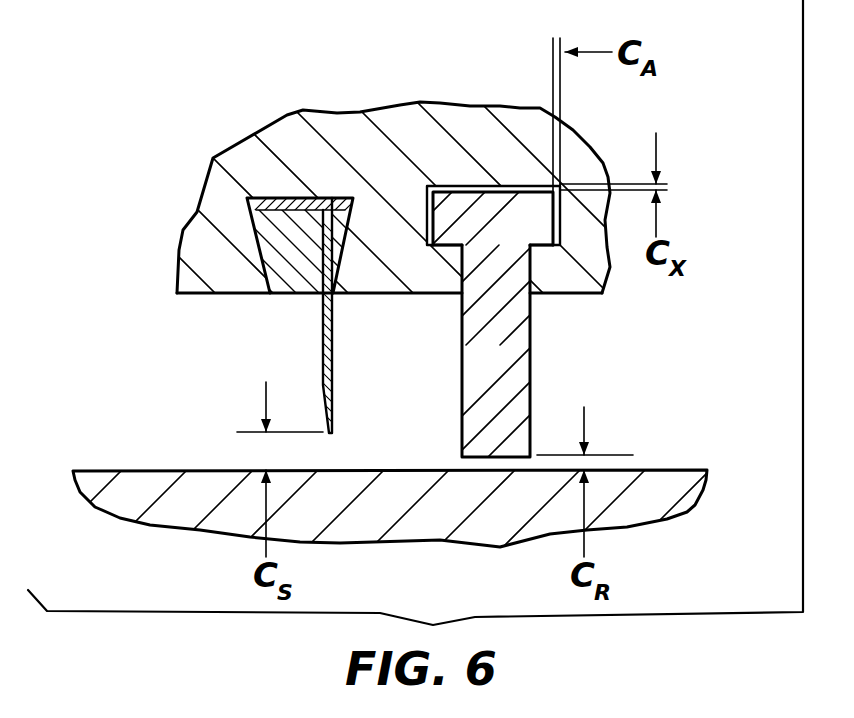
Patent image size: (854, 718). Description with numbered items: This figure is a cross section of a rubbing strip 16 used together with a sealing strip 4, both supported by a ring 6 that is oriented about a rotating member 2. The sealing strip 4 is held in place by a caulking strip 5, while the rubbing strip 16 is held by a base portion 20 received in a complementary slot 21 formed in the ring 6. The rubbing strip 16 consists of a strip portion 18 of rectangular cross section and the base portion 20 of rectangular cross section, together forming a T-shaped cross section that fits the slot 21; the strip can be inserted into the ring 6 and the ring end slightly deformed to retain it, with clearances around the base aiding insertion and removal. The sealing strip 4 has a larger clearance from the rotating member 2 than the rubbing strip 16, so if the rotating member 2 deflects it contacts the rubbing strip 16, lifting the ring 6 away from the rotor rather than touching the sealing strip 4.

The rotating member 2 is at (142, 497).
The sealing strip 4 is at (333, 352).
The caulking strip 5 is at (297, 298).
The ring 6 is at (377, 233).
The rubbing strip 16 is at (492, 308).
The strip portion 18 is at (495, 348).
The base portion 20 is at (487, 212).
The rubbing strip slot 21 is at (492, 186).